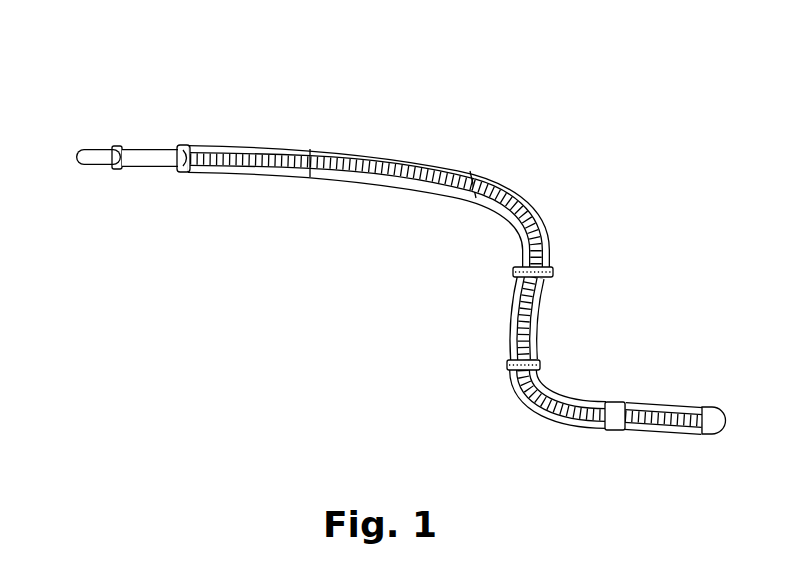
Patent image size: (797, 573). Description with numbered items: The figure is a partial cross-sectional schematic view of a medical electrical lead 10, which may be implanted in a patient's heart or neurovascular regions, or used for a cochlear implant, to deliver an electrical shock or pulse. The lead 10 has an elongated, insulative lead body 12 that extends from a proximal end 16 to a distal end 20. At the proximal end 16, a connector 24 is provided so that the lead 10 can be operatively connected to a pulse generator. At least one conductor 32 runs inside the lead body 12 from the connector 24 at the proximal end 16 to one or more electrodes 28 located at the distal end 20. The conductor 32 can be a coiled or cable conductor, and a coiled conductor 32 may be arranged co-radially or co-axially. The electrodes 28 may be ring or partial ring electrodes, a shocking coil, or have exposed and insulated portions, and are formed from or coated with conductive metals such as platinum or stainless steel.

The medical electrical lead 10 is at (104, 62).
The lead body 12 is at (425, 160).
The proximal end 16 is at (255, 146).
The distal end 20 is at (680, 404).
The connector 24 is at (158, 150).
The electrodes 28 is at (712, 411).
The conductor 32 is at (473, 169).